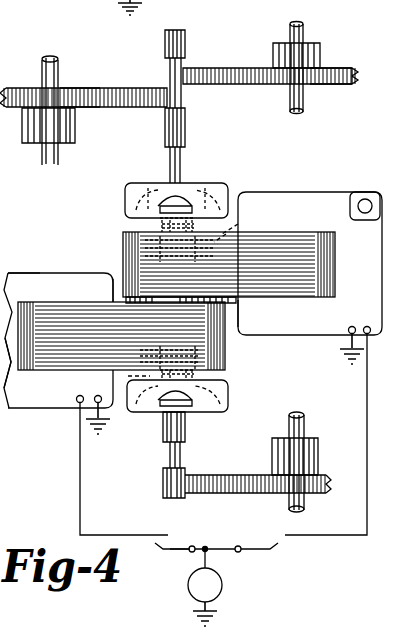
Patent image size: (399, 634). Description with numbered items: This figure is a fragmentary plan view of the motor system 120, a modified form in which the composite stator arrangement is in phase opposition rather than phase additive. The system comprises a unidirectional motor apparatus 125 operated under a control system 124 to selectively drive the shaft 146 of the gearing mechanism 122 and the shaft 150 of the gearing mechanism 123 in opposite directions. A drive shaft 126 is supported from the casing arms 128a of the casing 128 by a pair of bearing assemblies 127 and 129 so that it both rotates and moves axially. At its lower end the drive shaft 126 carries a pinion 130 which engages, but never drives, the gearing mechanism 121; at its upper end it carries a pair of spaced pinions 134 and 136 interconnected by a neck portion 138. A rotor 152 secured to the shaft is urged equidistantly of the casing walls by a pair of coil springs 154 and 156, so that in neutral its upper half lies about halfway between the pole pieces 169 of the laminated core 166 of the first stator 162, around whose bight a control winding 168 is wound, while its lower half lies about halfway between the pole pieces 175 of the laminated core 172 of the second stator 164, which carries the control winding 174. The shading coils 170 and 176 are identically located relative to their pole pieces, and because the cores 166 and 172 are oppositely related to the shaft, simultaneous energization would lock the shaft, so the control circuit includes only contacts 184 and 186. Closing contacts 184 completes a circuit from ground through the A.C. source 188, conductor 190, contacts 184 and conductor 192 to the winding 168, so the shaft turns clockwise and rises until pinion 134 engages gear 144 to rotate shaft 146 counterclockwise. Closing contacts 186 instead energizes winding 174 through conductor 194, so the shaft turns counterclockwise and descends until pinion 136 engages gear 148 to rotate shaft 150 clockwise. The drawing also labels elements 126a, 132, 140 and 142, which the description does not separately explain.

The motor system 120 is at (44, 200).
The gearing mechanism 121 is at (322, 470).
The gearing mechanism 122 is at (78, 86).
The gearing mechanism 123 is at (328, 68).
The control system 124 is at (180, 579).
The unidirectional motor apparatus 125 is at (113, 266).
The drive shaft 126 is at (170, 150).
The shaft hub 126a is at (163, 435).
The bearing assembly 127 is at (148, 185).
The casing 128 is at (188, 182).
The casing arms 128a is at (210, 190).
The bearing assembly 129 is at (214, 387).
The pinion 130 is at (163, 485).
The lower shaft 132 is at (170, 456).
The pinion 134 is at (165, 121).
The pinion 136 is at (185, 40).
The neck portion 138 is at (165, 57).
The lower rack 140 is at (237, 475).
The pinion shaft 142 is at (305, 422).
The gear 144 is at (137, 86).
The shaft 146 is at (44, 60).
The gear 148 is at (249, 66).
The shaft 150 is at (306, 31).
The rotor 152 is at (138, 228).
The coil spring 154 is at (127, 198).
The coil spring 156 is at (222, 355).
The first stator 162 is at (310, 232).
The second stator 164 is at (43, 300).
The laminated core 166 is at (290, 240).
The control winding 168 is at (349, 200).
The pole pieces 169 is at (238, 219).
The shading coil 170 is at (123, 234).
The laminated core 172 is at (68, 300).
The control winding 174 is at (37, 412).
The pole pieces 175 is at (128, 379).
The shading coil 176 is at (233, 318).
The contacts 184 is at (265, 548).
The contacts 186 is at (189, 543).
The A.C. source 188 is at (223, 587).
The conductor 190 is at (205, 560).
The conductor 192 is at (367, 506).
The conductor 194 is at (80, 517).